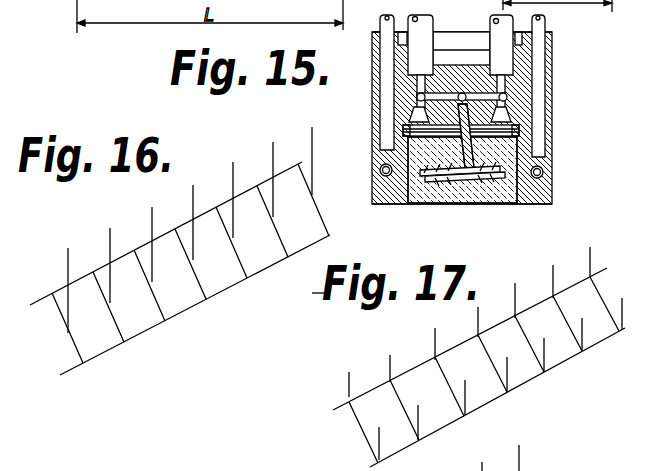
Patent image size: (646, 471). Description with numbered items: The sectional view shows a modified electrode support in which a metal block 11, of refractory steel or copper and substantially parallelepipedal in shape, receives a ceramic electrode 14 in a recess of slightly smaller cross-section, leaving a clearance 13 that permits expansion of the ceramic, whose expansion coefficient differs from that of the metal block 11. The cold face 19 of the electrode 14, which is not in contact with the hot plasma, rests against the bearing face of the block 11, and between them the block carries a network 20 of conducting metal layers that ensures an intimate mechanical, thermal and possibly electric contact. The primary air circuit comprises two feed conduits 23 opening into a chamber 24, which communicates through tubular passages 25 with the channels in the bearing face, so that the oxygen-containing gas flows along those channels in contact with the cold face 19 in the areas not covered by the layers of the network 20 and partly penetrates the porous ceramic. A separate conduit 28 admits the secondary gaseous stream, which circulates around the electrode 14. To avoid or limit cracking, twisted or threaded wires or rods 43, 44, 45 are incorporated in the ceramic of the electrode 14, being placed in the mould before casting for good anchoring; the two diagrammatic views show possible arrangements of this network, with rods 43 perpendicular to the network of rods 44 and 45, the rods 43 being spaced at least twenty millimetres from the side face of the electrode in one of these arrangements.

In FIG. 15, the metal block 11 is at (525, 82).
In FIG. 15, the clearance 13 is at (405, 169).
In FIG. 15, the electrode 14 is at (433, 177).
In FIG. 15, the cold face 19 is at (482, 137).
In FIG. 15, the network of conducting metal layers 20 is at (505, 130).
In FIG. 15, the feed conduits 23 is at (492, 32).
In FIG. 15, the chamber 24 is at (430, 96).
In FIG. 15, the tubular passages 25 is at (505, 108).
In FIG. 15, the conduit 28 is at (538, 43).
In FIG. 15, the twisted or threaded rods 43 is at (478, 178).
In FIG. 16, the twisted or threaded rods 43 is at (150, 225).
In FIG. 17, the twisted or threaded rods 43 is at (390, 363).
In FIG. 15, the twisted or threaded rods 44 is at (460, 178).
In FIG. 16, the twisted or threaded rods 44 is at (183, 305).
In FIG. 17, the twisted or threaded rods 44 is at (438, 428).
In FIG. 16, the twisted or threaded rods 45 is at (72, 338).
In FIG. 17, the twisted or threaded rods 45 is at (452, 391).